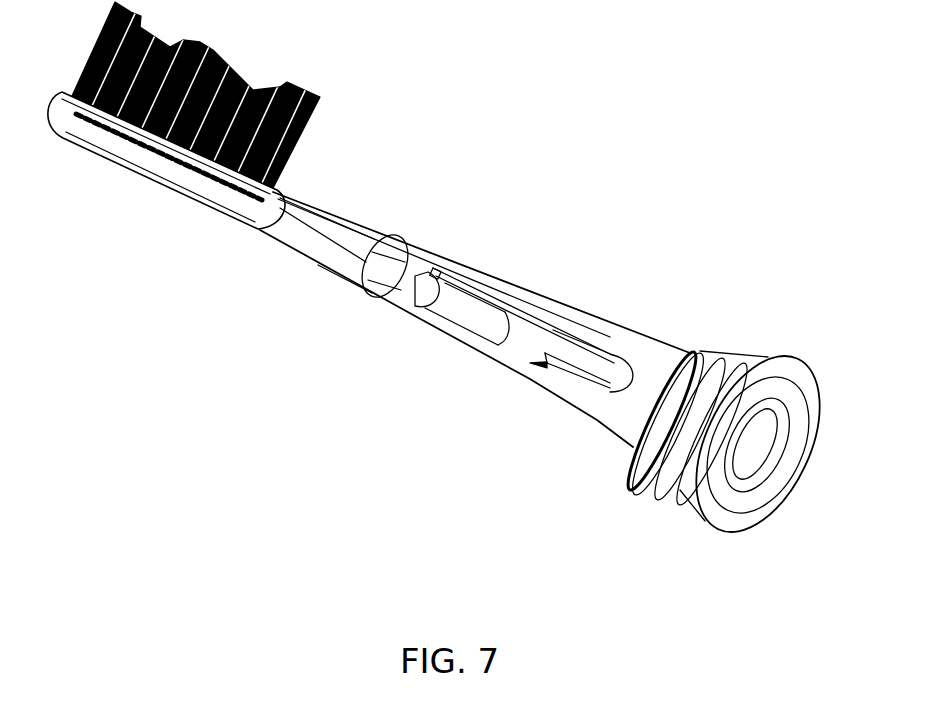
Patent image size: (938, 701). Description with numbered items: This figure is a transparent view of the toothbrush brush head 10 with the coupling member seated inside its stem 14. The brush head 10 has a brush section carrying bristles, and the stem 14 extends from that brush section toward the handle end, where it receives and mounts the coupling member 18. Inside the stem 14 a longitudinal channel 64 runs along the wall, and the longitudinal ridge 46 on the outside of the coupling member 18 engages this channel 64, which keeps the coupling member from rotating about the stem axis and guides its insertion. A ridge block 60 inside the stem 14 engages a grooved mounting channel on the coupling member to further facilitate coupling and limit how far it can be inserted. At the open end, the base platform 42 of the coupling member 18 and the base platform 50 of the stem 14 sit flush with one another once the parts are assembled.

The brush head 10 is at (468, 136).
The stem 14 is at (548, 289).
The coupling member 18 is at (778, 437).
The base platform 42 is at (734, 509).
The longitudinal ridge 46 is at (574, 333).
The base platform 50 is at (789, 481).
The ridge block 60 is at (467, 319).
The longitudinal channel 64 is at (472, 284).